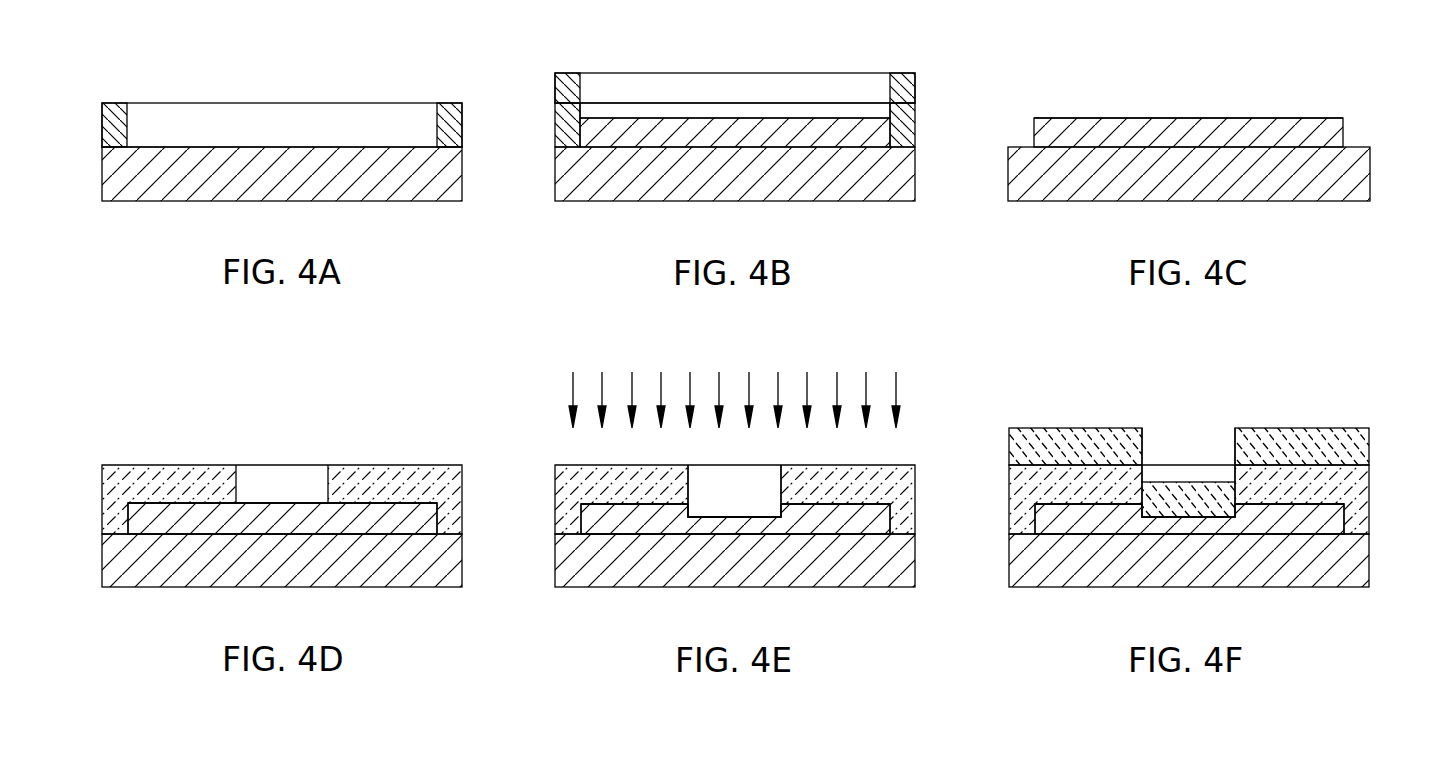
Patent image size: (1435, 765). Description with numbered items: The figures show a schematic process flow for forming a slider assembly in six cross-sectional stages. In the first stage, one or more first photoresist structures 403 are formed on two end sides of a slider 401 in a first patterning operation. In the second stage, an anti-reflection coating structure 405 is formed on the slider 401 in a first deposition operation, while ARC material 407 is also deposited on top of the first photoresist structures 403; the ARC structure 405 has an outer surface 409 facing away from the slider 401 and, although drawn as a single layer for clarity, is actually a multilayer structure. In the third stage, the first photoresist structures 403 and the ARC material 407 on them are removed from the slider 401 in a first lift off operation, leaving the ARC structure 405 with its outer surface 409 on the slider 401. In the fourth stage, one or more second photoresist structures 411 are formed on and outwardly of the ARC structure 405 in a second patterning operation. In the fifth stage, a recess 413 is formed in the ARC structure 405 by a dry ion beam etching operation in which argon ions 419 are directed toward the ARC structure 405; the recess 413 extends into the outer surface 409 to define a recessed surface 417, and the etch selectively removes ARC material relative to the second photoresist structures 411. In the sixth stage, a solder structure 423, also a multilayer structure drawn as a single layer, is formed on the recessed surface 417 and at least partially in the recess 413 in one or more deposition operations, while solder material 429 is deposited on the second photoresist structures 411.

In FIG. 4A, the slider 401 is at (169, 177).
In FIG. 4B, the slider 401 is at (620, 177).
In FIG. 4C, the slider 401 is at (1076, 177).
In FIG. 4D, the slider 401 is at (169, 564).
In FIG. 4E, the slider 401 is at (622, 564).
In FIG. 4F, the slider 401 is at (1075, 564).
In FIG. 4A, the first photoresist structures 403 is at (106, 131).
In FIG. 4B, the first photoresist structures 403 is at (562, 130).
In FIG. 4B, the anti-reflection coating (ARC) structure 405 is at (845, 125).
In FIG. 4C, the anti-reflection coating (ARC) structure 405 is at (1298, 125).
In FIG. 4D, the anti-reflection coating (ARC) structure 405 is at (397, 515).
In FIG. 4E, the anti-reflection coating (ARC) structure 405 is at (850, 517).
In FIG. 4F, the anti-reflection coating (ARC) structure 405 is at (1303, 517).
In FIG. 4B, the ARC material 407 is at (562, 90).
In FIG. 4B, the outer surface 409 is at (718, 118).
In FIG. 4C, the outer surface 409 is at (1172, 117).
In FIG. 4D, the outer surface 409 is at (265, 500).
In FIG. 4E, the outer surface 409 is at (718, 503).
In FIG. 4D, the second photoresist structures 411 is at (458, 485).
In FIG. 4E, the second photoresist structures 411 is at (912, 487).
In FIG. 4F, the second photoresist structures 411 is at (1365, 487).
In FIG. 4E, the recess 413 is at (760, 510).
In FIG. 4E, the recessed surface 417 is at (737, 518).
In FIG. 4F, the recessed surface 417 is at (1192, 518).
In FIG. 4E, the argon ions 419 is at (719, 388).
In FIG. 4F, the solder structure 423 is at (1210, 490).
In FIG. 4F, the solder material 429 is at (1047, 433).